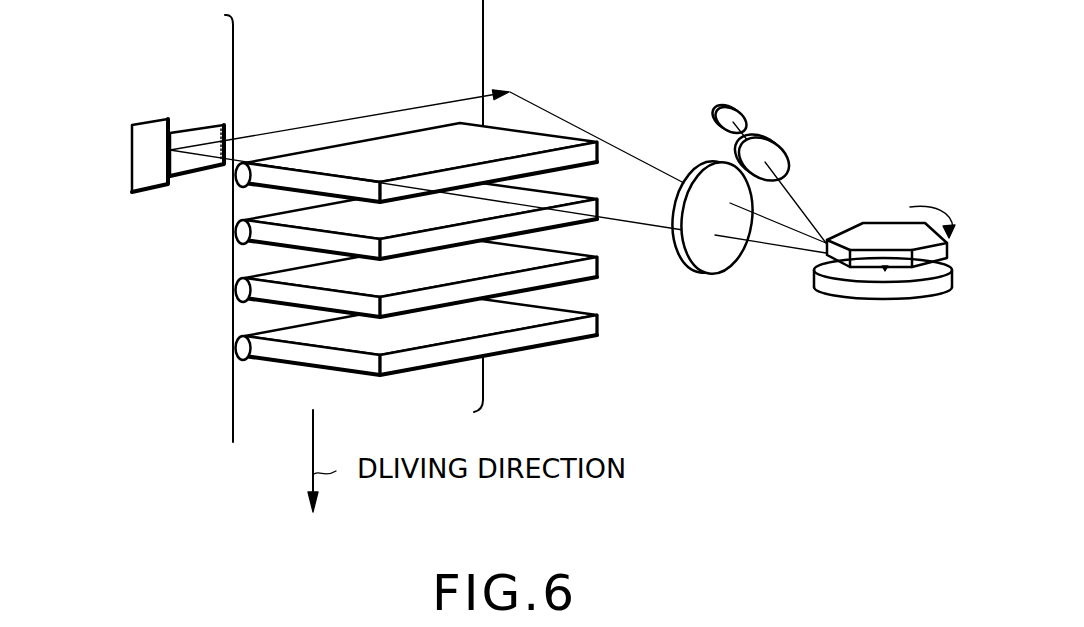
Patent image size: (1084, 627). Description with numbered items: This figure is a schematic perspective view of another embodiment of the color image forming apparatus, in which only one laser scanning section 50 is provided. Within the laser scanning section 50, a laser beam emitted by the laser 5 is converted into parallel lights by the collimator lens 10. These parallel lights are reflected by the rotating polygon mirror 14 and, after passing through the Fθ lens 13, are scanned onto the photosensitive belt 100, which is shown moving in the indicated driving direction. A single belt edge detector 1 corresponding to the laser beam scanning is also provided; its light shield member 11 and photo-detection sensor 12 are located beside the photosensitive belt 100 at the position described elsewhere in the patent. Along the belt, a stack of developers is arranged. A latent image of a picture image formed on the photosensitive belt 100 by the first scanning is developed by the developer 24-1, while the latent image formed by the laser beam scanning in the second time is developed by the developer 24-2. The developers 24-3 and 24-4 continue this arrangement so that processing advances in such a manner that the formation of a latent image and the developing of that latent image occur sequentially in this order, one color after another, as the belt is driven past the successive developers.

The belt edge detector 1 is at (149, 127).
The light shield member 11 is at (132, 163).
The photo-detection sensor 12 is at (190, 128).
The photosensitive belt 100 is at (243, 30).
The developer 24-1 is at (273, 178).
The developer 24-2 is at (273, 240).
The developer 24-3 is at (273, 300).
The developer 24-4 is at (273, 358).
The Fθ lens 13 is at (677, 250).
The laser 5 is at (728, 109).
The collimator lens 10 is at (773, 147).
The polygon mirror 14 is at (880, 227).
The laser scanning section 50 is at (884, 203).